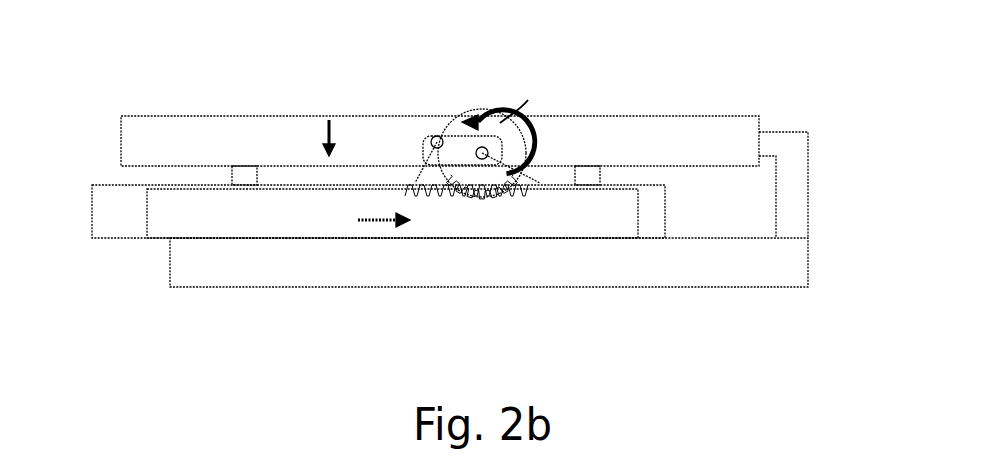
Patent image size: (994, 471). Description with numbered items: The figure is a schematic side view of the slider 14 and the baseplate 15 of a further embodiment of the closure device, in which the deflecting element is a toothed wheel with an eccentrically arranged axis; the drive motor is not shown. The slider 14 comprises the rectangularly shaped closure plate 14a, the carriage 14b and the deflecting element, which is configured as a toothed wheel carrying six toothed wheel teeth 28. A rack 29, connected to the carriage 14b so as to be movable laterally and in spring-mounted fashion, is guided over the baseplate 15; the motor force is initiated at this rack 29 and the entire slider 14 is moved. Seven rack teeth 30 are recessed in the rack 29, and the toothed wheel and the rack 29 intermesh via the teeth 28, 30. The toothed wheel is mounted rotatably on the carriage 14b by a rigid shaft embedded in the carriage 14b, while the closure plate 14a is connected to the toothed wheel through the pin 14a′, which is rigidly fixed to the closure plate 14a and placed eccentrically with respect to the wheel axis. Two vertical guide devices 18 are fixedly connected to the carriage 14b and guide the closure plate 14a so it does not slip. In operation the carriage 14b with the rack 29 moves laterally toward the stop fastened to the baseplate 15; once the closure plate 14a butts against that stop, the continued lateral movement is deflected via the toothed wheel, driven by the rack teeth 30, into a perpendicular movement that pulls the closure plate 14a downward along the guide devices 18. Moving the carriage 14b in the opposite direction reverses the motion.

The slider 14 is at (104, 167).
The closure plate 14a is at (215, 135).
The carriage 14b is at (135, 222).
The guide device 18 is at (242, 173).
The pin 14a′ is at (437, 136).
The baseplate 15 is at (468, 268).
The toothed wheel teeth 28 is at (513, 175).
The rack 29 is at (313, 225).
The rack teeth 30 is at (497, 192).